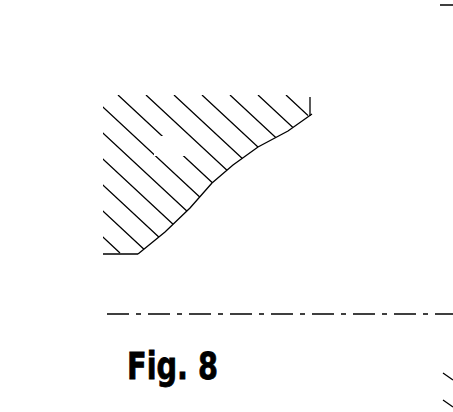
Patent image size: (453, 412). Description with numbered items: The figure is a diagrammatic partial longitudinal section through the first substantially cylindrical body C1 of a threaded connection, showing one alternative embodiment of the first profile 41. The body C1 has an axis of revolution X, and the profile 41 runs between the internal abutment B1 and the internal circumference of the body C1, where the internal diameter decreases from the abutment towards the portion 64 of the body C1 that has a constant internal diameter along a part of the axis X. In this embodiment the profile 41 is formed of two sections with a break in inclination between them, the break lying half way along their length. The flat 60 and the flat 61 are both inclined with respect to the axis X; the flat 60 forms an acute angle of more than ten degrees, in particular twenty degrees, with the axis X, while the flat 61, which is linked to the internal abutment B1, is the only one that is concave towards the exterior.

The first profile 41 is at (297, 248).
The flat 60 is at (172, 226).
The flat 61 is at (233, 165).
The portion of the body having a constant internal diameter 64 is at (130, 255).
The first substantially cylindrical body C1 is at (183, 155).
The internal abutment B1 is at (312, 113).
The axis of revolution X is at (388, 315).